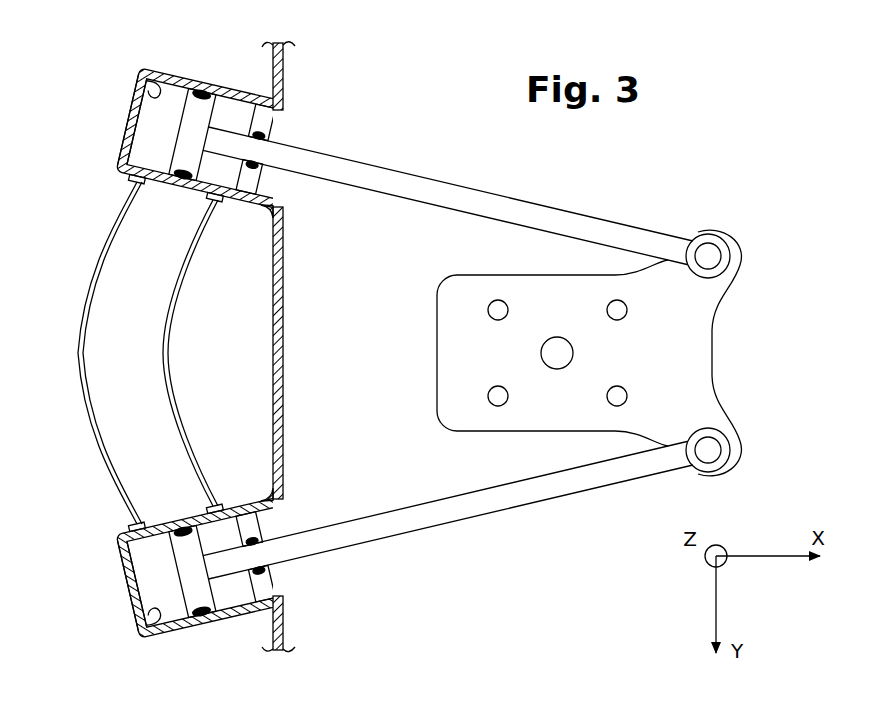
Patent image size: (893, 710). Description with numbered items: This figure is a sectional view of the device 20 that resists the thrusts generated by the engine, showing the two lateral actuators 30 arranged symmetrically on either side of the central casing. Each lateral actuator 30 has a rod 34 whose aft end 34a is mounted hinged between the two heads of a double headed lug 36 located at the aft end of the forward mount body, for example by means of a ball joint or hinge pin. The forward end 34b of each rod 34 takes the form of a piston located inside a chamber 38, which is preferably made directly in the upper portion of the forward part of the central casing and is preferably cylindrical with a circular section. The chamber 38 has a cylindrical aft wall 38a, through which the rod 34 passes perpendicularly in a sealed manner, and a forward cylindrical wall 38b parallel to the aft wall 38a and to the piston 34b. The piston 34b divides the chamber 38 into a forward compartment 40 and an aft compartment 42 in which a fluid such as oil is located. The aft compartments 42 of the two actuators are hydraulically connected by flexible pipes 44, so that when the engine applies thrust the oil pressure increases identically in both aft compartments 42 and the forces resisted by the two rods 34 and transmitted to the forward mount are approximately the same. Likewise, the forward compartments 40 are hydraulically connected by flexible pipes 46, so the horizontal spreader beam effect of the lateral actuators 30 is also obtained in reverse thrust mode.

The device resisting thrusts 20 is at (632, 146).
The lateral actuator 30 is at (97, 187).
The rod 34 is at (410, 173).
The aft end of the rod 34a is at (683, 242).
The forward end of the rod (piston) 34b is at (192, 107).
The double headed lug 36 is at (737, 247).
The chamber 38 is at (147, 78).
The cylindrical aft wall 38a is at (262, 123).
The forward cylindrical wall 38b is at (134, 101).
The forward compartment 40 is at (150, 147).
The aft compartment 42 is at (235, 113).
The flexible pipes 44 is at (173, 307).
The flexible pipes 46 is at (100, 277).